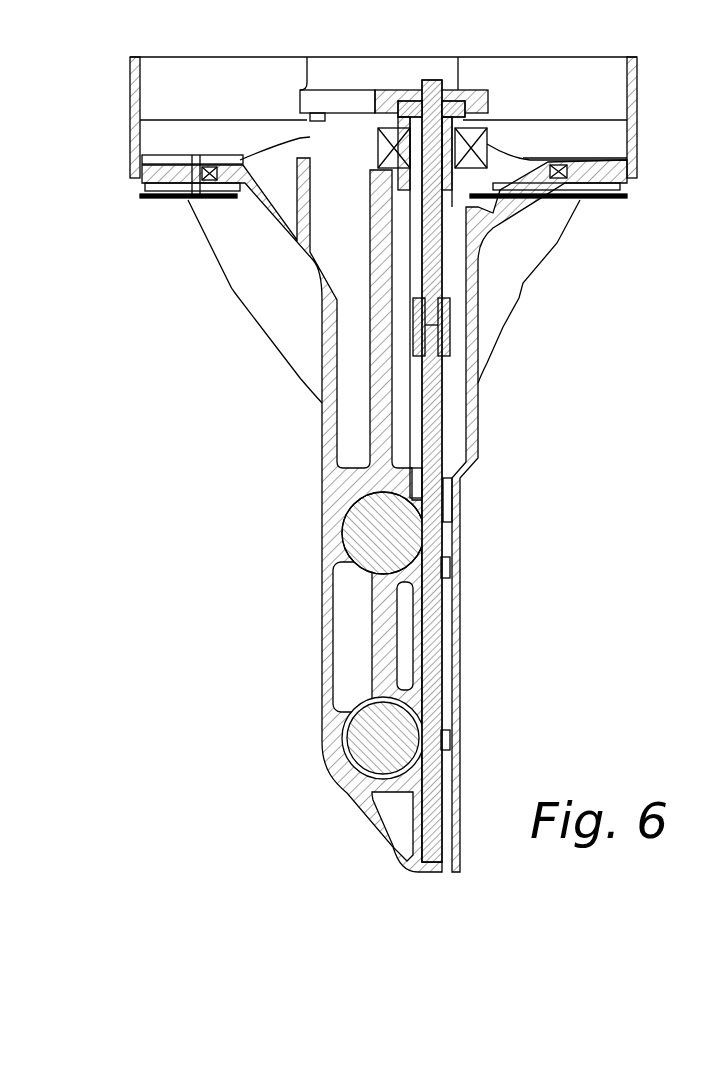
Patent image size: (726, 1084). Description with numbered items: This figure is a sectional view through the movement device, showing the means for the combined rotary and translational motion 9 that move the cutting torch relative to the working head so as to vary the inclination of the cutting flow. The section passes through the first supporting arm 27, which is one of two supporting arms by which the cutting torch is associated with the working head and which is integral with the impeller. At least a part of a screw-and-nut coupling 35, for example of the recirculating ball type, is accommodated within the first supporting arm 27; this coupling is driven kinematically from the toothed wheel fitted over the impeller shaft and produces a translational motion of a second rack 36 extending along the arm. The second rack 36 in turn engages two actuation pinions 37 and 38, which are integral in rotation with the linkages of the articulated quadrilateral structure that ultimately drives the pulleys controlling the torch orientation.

The means for combined rotary and translational motion 9 is at (520, 583).
The first supporting arm 27 is at (322, 444).
The screw-and-nut coupling 35 is at (441, 242).
The second rack 36 is at (432, 440).
The actuation pinion 37 is at (364, 536).
The actuation pinion 38 is at (377, 742).